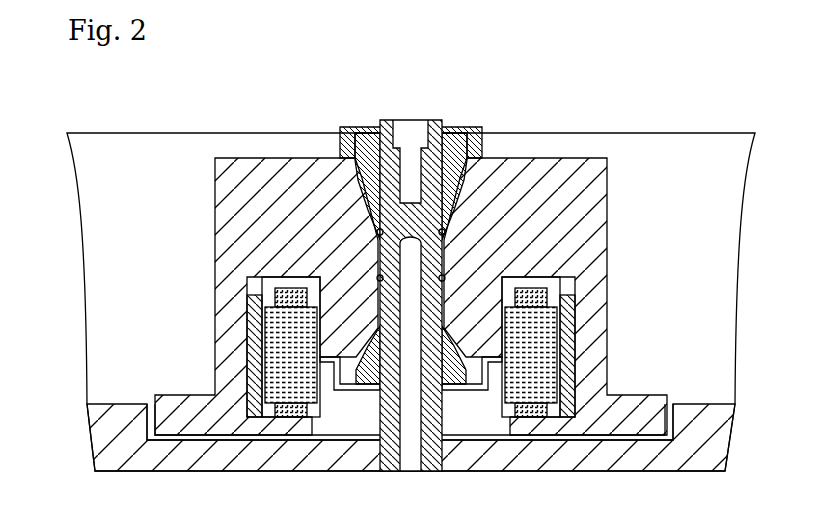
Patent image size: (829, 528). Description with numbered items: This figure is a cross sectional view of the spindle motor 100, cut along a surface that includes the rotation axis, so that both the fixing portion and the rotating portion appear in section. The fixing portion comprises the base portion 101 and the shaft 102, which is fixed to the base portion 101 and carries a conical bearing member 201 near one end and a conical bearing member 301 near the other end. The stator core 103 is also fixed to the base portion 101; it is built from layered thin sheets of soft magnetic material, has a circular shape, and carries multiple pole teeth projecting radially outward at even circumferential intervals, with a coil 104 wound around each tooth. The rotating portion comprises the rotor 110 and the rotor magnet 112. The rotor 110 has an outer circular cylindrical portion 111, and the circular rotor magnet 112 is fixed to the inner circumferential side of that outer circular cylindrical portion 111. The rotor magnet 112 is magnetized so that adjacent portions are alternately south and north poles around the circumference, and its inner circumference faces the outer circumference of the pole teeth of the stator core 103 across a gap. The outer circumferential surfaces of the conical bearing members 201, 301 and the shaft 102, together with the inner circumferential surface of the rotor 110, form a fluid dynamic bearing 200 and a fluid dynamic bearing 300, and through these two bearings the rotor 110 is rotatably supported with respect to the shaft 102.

The spindle motor 100 is at (558, 121).
The base portion 101 is at (625, 460).
The shaft 102 is at (378, 428).
The stator core 103 is at (505, 392).
The coil 104 is at (534, 418).
The rotor 110 is at (272, 156).
The outer circular cylindrical portion 111 is at (592, 360).
The rotor magnet 112 is at (566, 330).
The fluid dynamic bearing 200 is at (465, 178).
The conical bearing member 201 is at (359, 131).
The fluid dynamic bearing 300 is at (483, 388).
The conical bearing member 301 is at (367, 390).